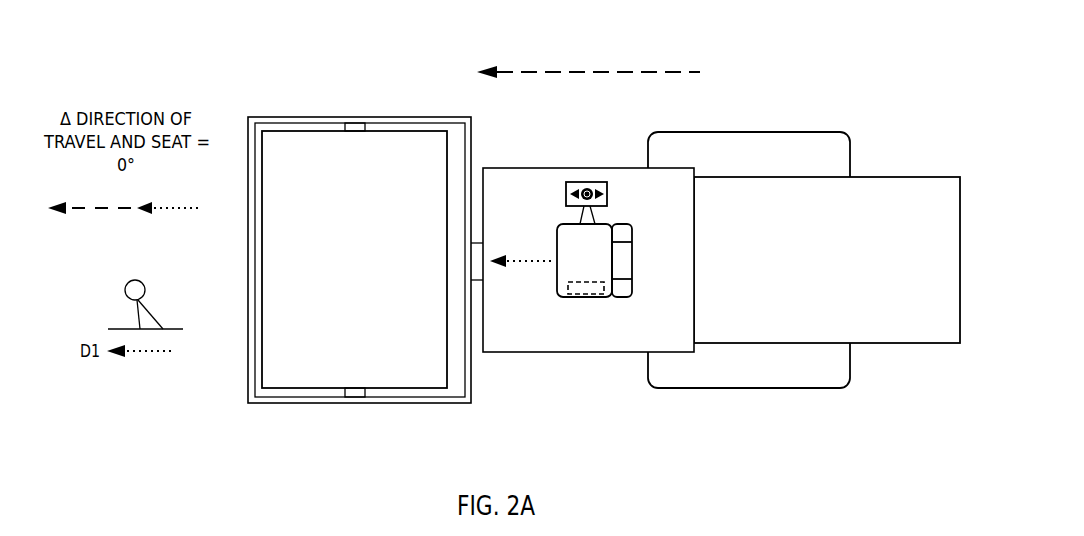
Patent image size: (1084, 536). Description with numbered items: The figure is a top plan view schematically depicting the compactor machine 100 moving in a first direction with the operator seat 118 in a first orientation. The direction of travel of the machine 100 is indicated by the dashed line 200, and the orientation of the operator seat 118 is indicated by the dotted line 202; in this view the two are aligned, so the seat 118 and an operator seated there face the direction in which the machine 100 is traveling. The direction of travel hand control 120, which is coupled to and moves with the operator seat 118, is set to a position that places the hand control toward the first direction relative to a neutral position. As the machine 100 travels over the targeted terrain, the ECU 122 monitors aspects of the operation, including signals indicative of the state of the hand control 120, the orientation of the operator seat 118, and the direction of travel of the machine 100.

The machine 100 is at (398, 44).
The dashed line 200 is at (640, 72).
The dotted line 202 is at (521, 257).
The direction of travel hand control 120 is at (578, 182).
The operator seat 118 is at (587, 297).
The ECU 122 is at (594, 290).